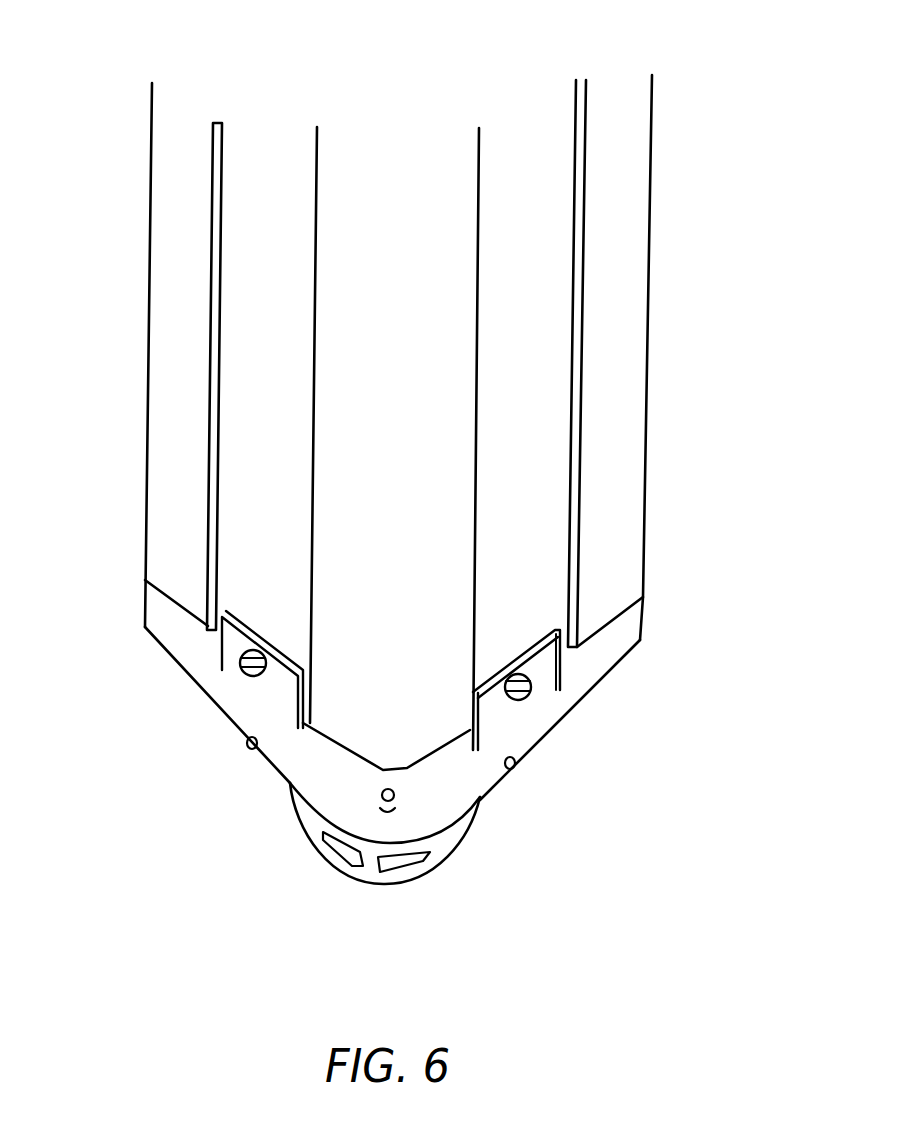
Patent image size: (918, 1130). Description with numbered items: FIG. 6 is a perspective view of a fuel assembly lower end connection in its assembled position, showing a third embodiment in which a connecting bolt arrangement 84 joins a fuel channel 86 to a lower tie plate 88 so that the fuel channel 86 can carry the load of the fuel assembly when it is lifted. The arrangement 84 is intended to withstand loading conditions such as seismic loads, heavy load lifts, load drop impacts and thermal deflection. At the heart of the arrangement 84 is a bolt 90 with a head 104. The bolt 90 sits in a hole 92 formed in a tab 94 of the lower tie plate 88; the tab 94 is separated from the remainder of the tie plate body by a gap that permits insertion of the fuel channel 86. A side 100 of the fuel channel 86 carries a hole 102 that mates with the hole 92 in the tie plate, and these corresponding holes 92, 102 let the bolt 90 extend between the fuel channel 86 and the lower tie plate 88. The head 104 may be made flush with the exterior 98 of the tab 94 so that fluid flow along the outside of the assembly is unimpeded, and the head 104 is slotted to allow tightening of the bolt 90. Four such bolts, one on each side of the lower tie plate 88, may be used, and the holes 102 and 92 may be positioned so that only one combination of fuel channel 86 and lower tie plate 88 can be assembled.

The connecting bolt arrangement 84 is at (731, 115).
The fuel channel 86 is at (165, 278).
The lower tie plate 88 is at (213, 680).
The bolt 90 is at (532, 677).
The hole 92 is at (527, 690).
The tab 94 is at (515, 702).
The exterior of the tab 98 is at (516, 674).
The side of the fuel channel 100 is at (533, 317).
The hole 102 is at (525, 652).
The head 104 is at (515, 657).